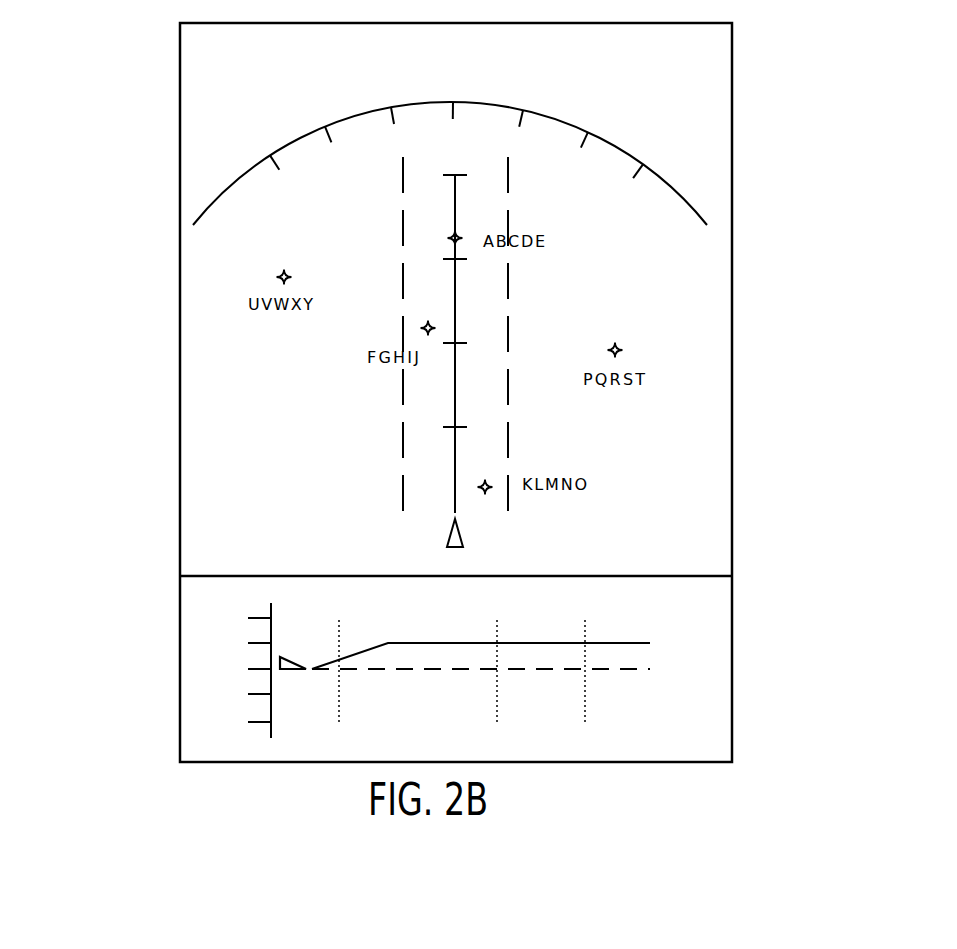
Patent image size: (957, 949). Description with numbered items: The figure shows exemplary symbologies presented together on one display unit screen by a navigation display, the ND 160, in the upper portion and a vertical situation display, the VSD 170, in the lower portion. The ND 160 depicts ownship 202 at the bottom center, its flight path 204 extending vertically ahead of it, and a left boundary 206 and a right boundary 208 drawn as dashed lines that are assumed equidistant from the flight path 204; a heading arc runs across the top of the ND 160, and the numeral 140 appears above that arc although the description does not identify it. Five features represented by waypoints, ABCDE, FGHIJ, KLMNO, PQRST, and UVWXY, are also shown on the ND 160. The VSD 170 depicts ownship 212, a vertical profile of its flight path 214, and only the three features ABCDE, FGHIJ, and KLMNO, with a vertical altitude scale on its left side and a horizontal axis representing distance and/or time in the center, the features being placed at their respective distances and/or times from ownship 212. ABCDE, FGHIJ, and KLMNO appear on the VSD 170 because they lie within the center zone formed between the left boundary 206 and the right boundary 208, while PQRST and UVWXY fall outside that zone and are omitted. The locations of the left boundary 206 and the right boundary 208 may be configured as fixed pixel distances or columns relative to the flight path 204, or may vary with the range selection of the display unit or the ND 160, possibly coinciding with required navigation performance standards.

The heading scale 140 is at (450, 152).
The ND 160 is at (168, 302).
The VSD 170 is at (168, 668).
The ownship 202 is at (426, 522).
The flight path 204 is at (469, 301).
The left boundary 206 is at (391, 433).
The right boundary 208 is at (520, 433).
The ownship 212 is at (294, 642).
The vertical profile of its flight path 214 is at (670, 648).